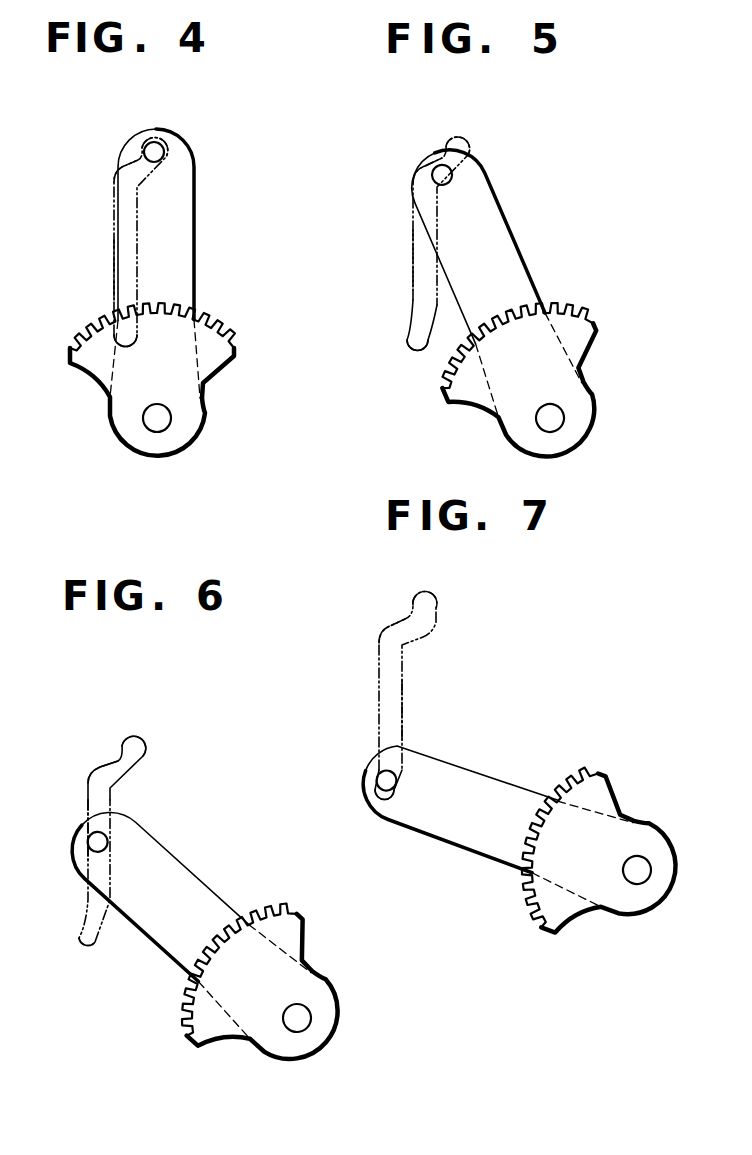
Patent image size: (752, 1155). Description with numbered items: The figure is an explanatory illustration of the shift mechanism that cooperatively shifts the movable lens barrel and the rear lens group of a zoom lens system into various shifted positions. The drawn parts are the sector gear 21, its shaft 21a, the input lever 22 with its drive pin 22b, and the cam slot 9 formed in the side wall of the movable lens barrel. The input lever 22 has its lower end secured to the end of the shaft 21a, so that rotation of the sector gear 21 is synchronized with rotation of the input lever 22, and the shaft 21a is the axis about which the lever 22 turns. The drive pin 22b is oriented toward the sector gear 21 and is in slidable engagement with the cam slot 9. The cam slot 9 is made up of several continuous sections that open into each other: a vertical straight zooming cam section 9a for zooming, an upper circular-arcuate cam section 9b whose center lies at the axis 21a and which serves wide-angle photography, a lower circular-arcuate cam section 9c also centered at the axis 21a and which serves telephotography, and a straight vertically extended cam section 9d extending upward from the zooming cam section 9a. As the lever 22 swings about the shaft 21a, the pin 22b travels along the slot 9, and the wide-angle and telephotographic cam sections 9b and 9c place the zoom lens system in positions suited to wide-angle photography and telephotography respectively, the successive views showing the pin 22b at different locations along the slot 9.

In FIG. 4, the cam slot 9 is at (108, 212).
In FIG. 5, the cam slot 9 is at (406, 222).
In FIG. 6, the cam slot 9 is at (118, 805).
In FIG. 7, the cam slot 9 is at (412, 675).
In FIG. 4, the zooming cam section 9a is at (123, 255).
In FIG. 5, the zooming cam section 9a is at (410, 255).
In FIG. 6, the zooming cam section 9a is at (83, 807).
In FIG. 7, the zooming cam section 9a is at (403, 712).
In FIG. 4, the upper circular-arcuate cam section 9b is at (122, 167).
In FIG. 5, the upper circular-arcuate cam section 9b is at (425, 172).
In FIG. 6, the upper circular-arcuate cam section 9b is at (105, 763).
In FIG. 7, the upper circular-arcuate cam section 9b is at (397, 620).
In FIG. 4, the lower circular-arcuate cam section 9c is at (110, 337).
In FIG. 5, the lower circular-arcuate cam section 9c is at (405, 342).
In FIG. 6, the lower circular-arcuate cam section 9c is at (98, 953).
In FIG. 7, the lower circular-arcuate cam section 9c is at (383, 813).
In FIG. 4, the straight vertically extended cam section 9d is at (155, 136).
In FIG. 5, the straight vertically extended cam section 9d is at (462, 138).
In FIG. 6, the straight vertically extended cam section 9d is at (143, 732).
In FIG. 7, the straight vertically extended cam section 9d is at (438, 600).
In FIG. 4, the sector gear 21 is at (213, 352).
In FIG. 5, the sector gear 21 is at (570, 340).
In FIG. 6, the sector gear 21 is at (280, 930).
In FIG. 7, the sector gear 21 is at (593, 797).
In FIG. 4, the shaft 21a is at (163, 417).
In FIG. 5, the shaft 21a is at (553, 418).
In FIG. 6, the shaft 21a is at (300, 1017).
In FIG. 7, the shaft 21a is at (637, 875).
In FIG. 4, the input lever 22 is at (178, 218).
In FIG. 5, the input lever 22 is at (507, 247).
In FIG. 6, the input lever 22 is at (200, 887).
In FIG. 7, the input lever 22 is at (489, 779).
In FIG. 4, the drive pin 22b is at (157, 152).
In FIG. 5, the drive pin 22b is at (445, 178).
In FIG. 6, the drive pin 22b is at (96, 840).
In FIG. 7, the drive pin 22b is at (381, 777).